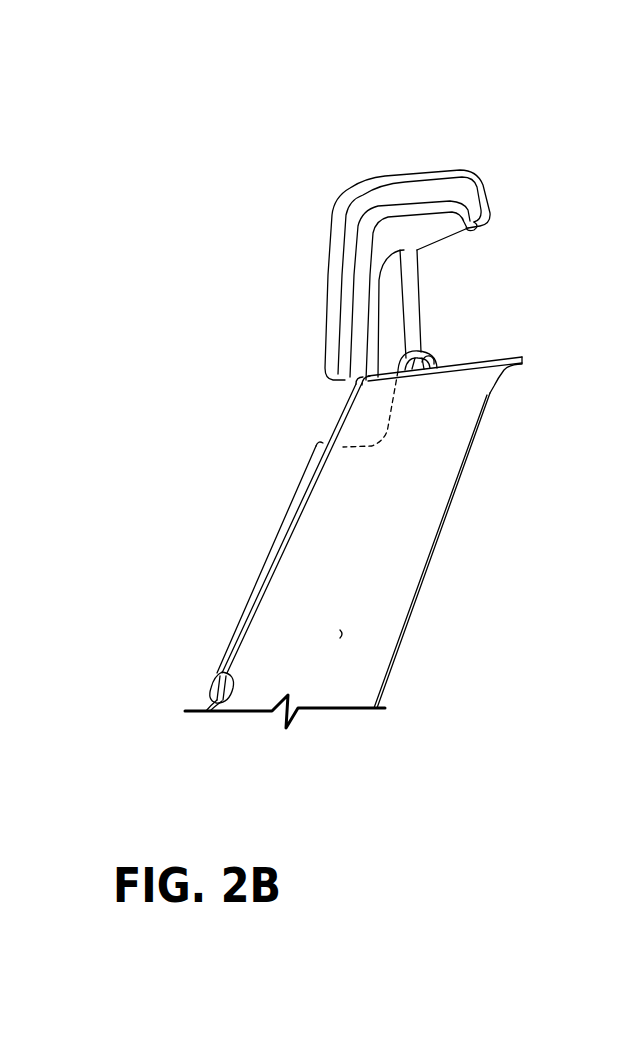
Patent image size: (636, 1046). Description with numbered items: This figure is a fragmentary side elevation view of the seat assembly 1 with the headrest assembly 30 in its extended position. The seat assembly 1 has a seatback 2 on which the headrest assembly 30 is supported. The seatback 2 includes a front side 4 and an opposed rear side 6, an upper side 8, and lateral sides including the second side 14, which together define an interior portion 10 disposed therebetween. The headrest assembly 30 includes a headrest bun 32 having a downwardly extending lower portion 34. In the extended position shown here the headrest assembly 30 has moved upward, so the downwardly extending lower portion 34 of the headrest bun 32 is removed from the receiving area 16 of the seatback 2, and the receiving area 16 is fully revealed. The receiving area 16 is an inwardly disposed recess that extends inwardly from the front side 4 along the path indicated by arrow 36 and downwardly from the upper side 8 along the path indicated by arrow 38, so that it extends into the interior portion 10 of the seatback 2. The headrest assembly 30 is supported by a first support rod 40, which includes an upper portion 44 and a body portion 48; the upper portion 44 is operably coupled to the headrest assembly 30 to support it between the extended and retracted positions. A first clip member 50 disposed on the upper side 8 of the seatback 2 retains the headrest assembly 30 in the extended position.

The seat assembly 1 is at (338, 138).
The seatback 2 is at (494, 507).
The front side 4 is at (245, 602).
The rear side 6 is at (423, 585).
The upper side 8 is at (500, 357).
The interior portion 10 is at (342, 634).
The second side 14 is at (393, 552).
The receiving area 16 is at (394, 427).
The headrest assembly 30 is at (423, 163).
The headrest bun 32 is at (318, 269).
The downwardly extending lower portion 34 is at (325, 297).
The arrow 36 is at (367, 417).
The arrow 38 is at (349, 436).
The first support rod 40 is at (447, 283).
The upper portion 44 is at (453, 278).
The body portion 48 is at (412, 333).
The first clip member 50 is at (433, 353).